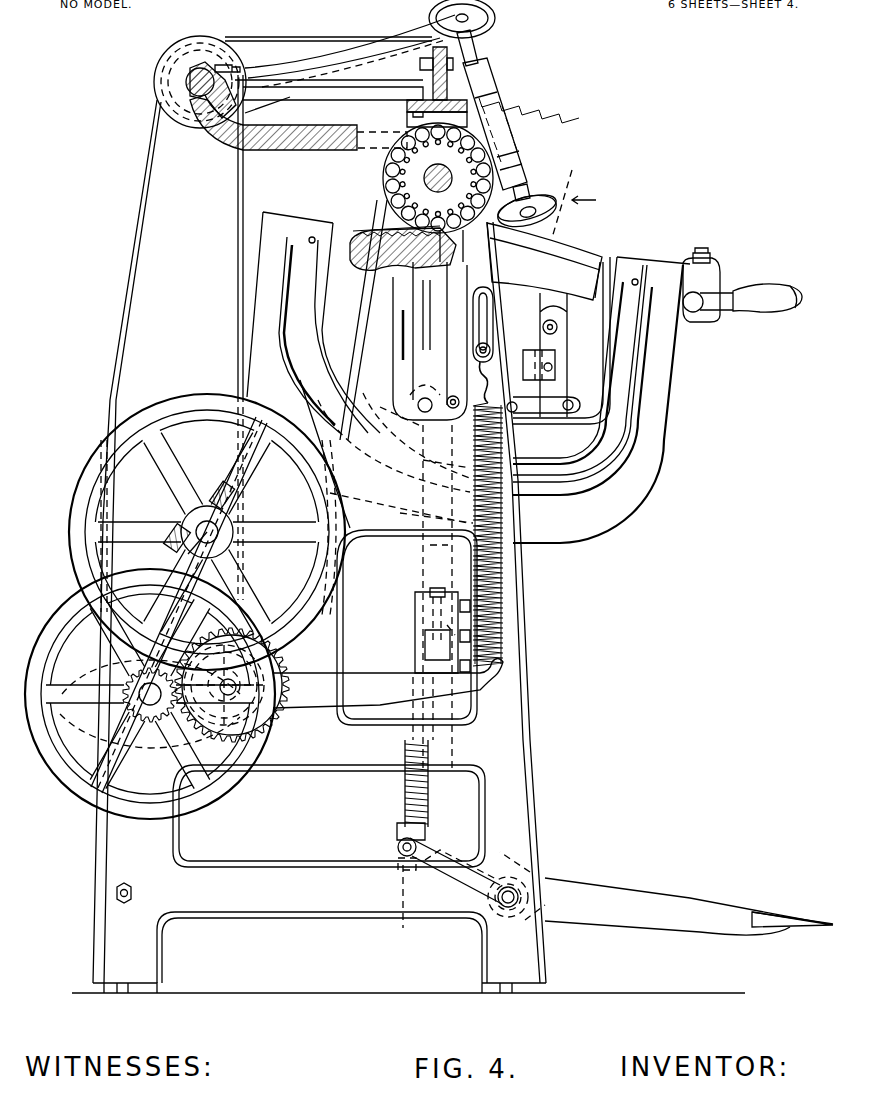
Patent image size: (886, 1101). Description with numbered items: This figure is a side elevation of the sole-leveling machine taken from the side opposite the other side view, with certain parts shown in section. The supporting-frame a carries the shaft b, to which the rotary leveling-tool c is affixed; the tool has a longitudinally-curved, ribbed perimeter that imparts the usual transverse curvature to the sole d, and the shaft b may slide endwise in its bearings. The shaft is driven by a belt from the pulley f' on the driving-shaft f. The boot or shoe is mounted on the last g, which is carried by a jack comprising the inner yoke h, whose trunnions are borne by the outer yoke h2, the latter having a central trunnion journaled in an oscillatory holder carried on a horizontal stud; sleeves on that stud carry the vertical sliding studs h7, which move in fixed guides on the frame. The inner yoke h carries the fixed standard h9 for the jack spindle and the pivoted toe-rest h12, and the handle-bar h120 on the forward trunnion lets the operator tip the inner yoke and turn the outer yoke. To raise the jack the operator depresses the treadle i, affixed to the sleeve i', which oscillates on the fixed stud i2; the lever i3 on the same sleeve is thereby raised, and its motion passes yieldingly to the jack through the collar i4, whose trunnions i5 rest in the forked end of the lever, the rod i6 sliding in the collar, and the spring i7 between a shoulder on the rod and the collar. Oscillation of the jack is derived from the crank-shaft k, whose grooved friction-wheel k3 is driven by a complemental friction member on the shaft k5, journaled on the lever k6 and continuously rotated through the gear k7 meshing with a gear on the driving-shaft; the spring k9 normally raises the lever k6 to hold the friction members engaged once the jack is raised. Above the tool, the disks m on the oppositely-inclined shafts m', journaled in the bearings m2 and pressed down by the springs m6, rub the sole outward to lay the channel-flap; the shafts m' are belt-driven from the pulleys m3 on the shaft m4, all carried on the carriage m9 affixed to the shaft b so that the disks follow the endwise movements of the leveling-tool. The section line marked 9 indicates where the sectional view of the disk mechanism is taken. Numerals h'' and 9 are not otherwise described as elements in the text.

The supporting-frame a is at (518, 722).
The shaft b is at (432, 180).
The rotary leveling-tool c is at (383, 170).
The sole d is at (560, 238).
The driving-shaft f is at (150, 715).
The pulley f' is at (148, 694).
The last g is at (523, 295).
The inner yoke h is at (561, 340).
The outer yoke h2 is at (656, 430).
The vertical sliding stud h7 is at (440, 553).
The slide block h'' is at (423, 633).
The fixed standard h9 is at (568, 338).
The toe-rest h12 is at (398, 302).
The handle-bar h120 is at (724, 308).
The treadle i is at (689, 904).
The sleeve i' is at (529, 879).
The fixed stud i2 is at (508, 908).
The lever i3 is at (456, 864).
The collar i4 is at (398, 826).
The trunnions i5 is at (398, 848).
The rod i6 is at (411, 909).
The spring i7 is at (400, 778).
The crank-shaft k is at (198, 530).
The peripherally-grooved friction-wheel k3 is at (75, 516).
The shaft k5 is at (282, 662).
The lever k6 is at (350, 682).
The gear k7 is at (268, 738).
The spring k9 is at (505, 597).
The disk m is at (526, 200).
The oppositely-inclined shaft m' is at (506, 115).
The bearing m2 is at (480, 80).
The pulley m3 is at (172, 68).
The shaft m4 is at (212, 100).
The spring m6 is at (495, 124).
The carriage m9 is at (304, 152).
The direction line 9 is at (532, 219).